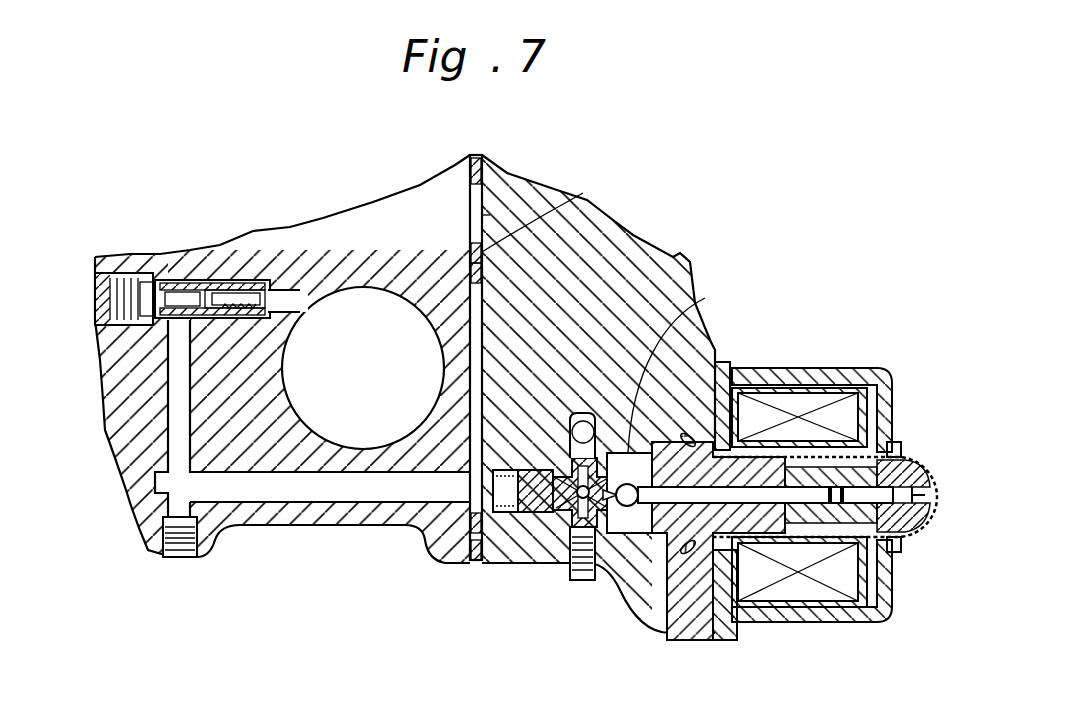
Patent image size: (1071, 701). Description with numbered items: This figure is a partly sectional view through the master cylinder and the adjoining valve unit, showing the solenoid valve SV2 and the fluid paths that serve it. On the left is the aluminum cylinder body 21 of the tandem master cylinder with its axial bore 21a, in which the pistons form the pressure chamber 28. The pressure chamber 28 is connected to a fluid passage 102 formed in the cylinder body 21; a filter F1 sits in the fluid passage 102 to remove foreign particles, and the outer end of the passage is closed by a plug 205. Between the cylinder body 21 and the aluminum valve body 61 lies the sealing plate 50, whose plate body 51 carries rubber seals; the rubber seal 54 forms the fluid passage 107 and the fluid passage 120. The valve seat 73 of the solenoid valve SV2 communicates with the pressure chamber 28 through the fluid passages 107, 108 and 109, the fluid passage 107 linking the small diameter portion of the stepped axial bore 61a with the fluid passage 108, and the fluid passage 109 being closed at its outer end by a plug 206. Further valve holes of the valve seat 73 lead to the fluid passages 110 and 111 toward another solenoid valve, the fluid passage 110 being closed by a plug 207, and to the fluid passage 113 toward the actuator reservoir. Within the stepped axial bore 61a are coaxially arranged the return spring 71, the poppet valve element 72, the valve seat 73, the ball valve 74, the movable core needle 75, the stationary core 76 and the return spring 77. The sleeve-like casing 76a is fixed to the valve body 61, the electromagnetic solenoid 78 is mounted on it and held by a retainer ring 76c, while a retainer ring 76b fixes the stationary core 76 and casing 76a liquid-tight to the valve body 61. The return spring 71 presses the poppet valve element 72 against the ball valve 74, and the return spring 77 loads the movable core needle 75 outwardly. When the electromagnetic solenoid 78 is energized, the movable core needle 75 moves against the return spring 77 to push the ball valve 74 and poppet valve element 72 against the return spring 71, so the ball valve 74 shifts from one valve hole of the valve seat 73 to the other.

The cylinder body 21 is at (425, 290).
The axial bore 21a is at (383, 262).
The pressure chamber 28 is at (323, 318).
The sealing plate 50 is at (429, 361).
The plate body 51 is at (477, 558).
The rubber seal 54 is at (583, 193).
The valve body 61 is at (653, 275).
The stepped axial bore 61a is at (628, 533).
The return spring 71 is at (498, 513).
The poppet valve element 72 is at (540, 512).
The valve seat 73 is at (570, 520).
The ball valve 74 is at (581, 499).
The movable core needle 75 is at (660, 533).
The stationary core 76 is at (811, 526).
The sleeve-like casing 76a is at (903, 540).
The retainer ring 76b is at (698, 600).
The retainer ring 76c is at (895, 452).
The return spring 77 is at (780, 530).
The electromagnetic solenoid 78 is at (837, 580).
The fluid passage 102 is at (293, 295).
The fluid passage 107 is at (472, 455).
The fluid passage 108 is at (320, 492).
The fluid passage 109 is at (266, 443).
The fluid passage 110 is at (577, 448).
The fluid passage 111 is at (687, 365).
The fluid passage 113 is at (710, 345).
The fluid passage 120 is at (480, 220).
The plug 205 is at (143, 282).
The plug 206 is at (183, 547).
The plug 207 is at (588, 580).
The filter F1 is at (226, 296).
The solenoid valve SV2 is at (772, 469).